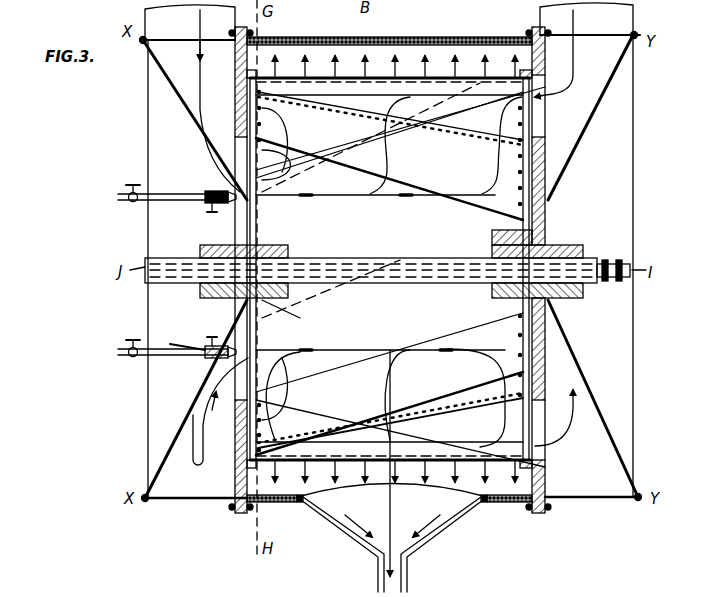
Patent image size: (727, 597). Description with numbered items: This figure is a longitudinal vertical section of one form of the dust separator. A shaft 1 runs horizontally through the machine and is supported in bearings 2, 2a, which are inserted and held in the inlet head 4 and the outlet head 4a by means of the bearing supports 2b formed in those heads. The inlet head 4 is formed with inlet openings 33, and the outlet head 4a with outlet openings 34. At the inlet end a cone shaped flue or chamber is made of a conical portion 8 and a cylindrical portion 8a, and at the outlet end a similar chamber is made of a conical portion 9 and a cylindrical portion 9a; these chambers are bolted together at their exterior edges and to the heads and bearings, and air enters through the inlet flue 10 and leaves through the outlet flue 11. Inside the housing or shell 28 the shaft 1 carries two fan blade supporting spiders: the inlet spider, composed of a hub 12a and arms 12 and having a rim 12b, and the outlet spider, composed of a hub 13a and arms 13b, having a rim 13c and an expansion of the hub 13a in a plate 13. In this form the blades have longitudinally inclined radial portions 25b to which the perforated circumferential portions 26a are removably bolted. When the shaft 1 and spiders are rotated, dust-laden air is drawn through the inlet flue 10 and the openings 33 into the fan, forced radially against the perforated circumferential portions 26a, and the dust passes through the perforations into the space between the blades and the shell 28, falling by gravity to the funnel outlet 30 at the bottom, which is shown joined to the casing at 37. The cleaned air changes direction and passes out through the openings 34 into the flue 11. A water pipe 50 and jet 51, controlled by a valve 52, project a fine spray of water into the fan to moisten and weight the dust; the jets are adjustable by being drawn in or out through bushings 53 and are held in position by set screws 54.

The shaft 1 is at (360, 285).
The bearing 2 is at (204, 246).
The bearing 2a is at (572, 246).
The bearing support 2b is at (266, 300).
The inlet head 4 is at (236, 103).
The outlet head 4a is at (546, 148).
The conical portion of inlet flue 8 is at (192, 137).
The cylindrical portion of inlet flue 8a is at (185, 497).
The conical portion of outlet flue 9 is at (588, 137).
The cylindrical portion of outlet flue 9a is at (582, 494).
The inlet flue 10 is at (189, 22).
The outlet flue 11 is at (590, 19).
The inlet spider arm 12 is at (262, 167).
The inlet spider hub 12a is at (330, 212).
The inlet spider rim 12b is at (258, 118).
The plate 13 is at (522, 178).
The outlet spider hub 13a is at (515, 256).
The outlet spider arm 13b is at (548, 446).
The outlet spider rim 13c is at (548, 95).
The longitudinally inclined radial blade portion 25b is at (390, 181).
The circumferential blade portion 26a is at (392, 80).
The housing shell 28 is at (370, 37).
The funnel outlet 30 is at (345, 530).
The inlet opening 33 is at (237, 160).
The outlet opening 34 is at (546, 110).
The funnel connection 37 is at (318, 462).
The water pipe 50 is at (177, 363).
The water jet 51 is at (220, 360).
The valve 52 is at (130, 357).
The bushing 53 is at (202, 348).
The set screw 54 is at (210, 338).